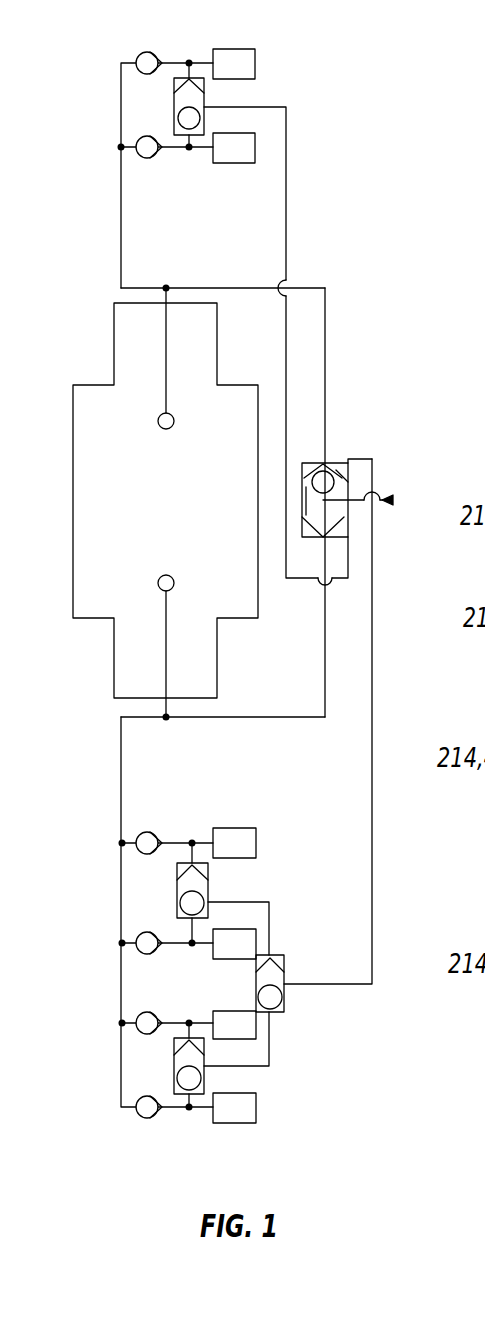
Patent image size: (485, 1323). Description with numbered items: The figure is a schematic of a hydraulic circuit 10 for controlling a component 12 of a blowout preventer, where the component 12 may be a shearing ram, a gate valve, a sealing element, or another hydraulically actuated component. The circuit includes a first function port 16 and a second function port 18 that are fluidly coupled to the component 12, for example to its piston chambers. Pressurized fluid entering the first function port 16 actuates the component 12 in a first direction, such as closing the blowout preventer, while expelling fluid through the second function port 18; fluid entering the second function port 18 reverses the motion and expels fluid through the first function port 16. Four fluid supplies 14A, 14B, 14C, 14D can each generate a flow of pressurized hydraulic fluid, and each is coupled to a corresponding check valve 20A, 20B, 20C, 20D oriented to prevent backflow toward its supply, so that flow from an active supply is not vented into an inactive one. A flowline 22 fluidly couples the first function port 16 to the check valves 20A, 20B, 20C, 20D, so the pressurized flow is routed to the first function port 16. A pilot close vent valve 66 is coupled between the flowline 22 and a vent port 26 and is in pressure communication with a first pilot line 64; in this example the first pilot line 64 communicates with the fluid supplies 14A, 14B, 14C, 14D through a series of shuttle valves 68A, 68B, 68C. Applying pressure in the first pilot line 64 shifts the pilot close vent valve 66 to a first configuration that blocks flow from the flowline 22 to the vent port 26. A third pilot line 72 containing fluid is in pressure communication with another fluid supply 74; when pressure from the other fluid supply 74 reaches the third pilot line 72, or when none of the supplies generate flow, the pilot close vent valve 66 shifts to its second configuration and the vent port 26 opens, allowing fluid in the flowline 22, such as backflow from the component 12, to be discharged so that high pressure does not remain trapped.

The hydraulic circuit 10 is at (146, 38).
The component 12 is at (73, 502).
The fluid supply 14A is at (232, 827).
The fluid supply 14B is at (256, 943).
The fluid supply 14C is at (257, 1025).
The fluid supply 14D is at (233, 1124).
The first function port 16 is at (167, 572).
The second function port 18 is at (165, 430).
The check valve 20A is at (152, 830).
The check valve 20B is at (152, 930).
The check valve 20C is at (153, 1012).
The check valve 20D is at (158, 1118).
The flowline 22 is at (121, 800).
The vent port 26 is at (395, 498).
The first pilot line 64 is at (373, 717).
The pilot close vent valve 66 is at (332, 462).
The shuttle valve 68A is at (207, 883).
The shuttle valve 68B is at (287, 990).
The shuttle valve 68C is at (205, 1075).
The third pilot line 72 is at (287, 240).
The other fluid supply 74 is at (233, 165).